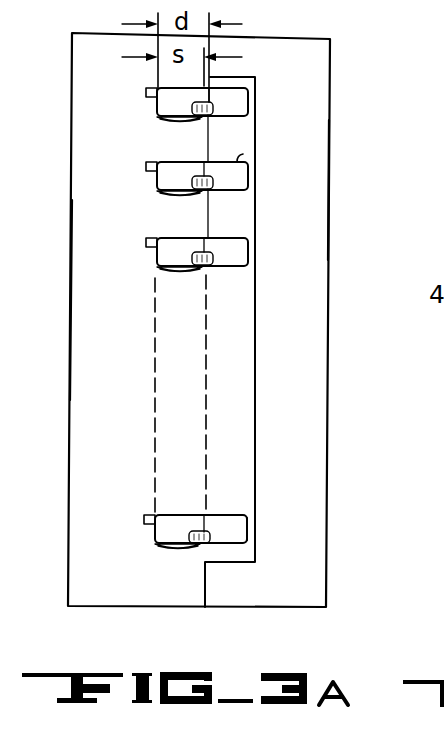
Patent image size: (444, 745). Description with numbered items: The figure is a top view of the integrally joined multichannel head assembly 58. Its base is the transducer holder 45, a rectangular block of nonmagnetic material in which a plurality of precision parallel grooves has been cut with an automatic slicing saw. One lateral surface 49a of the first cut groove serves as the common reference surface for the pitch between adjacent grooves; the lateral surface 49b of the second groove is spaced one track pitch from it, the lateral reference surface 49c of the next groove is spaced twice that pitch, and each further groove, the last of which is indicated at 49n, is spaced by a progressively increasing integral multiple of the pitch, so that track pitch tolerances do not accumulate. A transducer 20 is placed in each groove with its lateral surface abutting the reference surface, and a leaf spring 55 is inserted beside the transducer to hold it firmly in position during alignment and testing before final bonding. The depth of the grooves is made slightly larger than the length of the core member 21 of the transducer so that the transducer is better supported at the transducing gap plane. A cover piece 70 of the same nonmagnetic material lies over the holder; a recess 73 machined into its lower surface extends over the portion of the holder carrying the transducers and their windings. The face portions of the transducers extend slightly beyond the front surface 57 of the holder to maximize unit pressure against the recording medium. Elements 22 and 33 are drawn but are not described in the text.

The multichannel head assembly 58 is at (346, 52).
The transducer holder 45 is at (83, 292).
The cover piece 70 is at (320, 195).
The recess 73 is at (253, 345).
The lateral surface of first groove 49a is at (176, 88).
The lateral surface of second groove 49b is at (176, 162).
The lateral reference surface of next groove 49c is at (176, 238).
The n-th light emitting module 49n is at (176, 515).
The transducer 20 is at (173, 100).
The core member 21 is at (173, 532).
The module terminal 22 is at (237, 530).
The module connector 33 is at (243, 154).
The leaf spring 55 is at (182, 270).
The front surface of the holder 57 is at (127, 404).